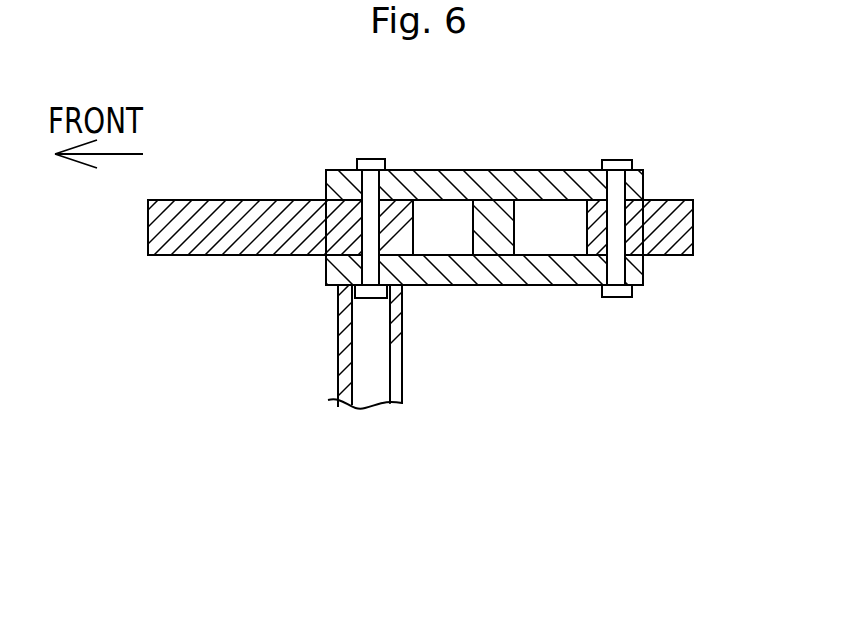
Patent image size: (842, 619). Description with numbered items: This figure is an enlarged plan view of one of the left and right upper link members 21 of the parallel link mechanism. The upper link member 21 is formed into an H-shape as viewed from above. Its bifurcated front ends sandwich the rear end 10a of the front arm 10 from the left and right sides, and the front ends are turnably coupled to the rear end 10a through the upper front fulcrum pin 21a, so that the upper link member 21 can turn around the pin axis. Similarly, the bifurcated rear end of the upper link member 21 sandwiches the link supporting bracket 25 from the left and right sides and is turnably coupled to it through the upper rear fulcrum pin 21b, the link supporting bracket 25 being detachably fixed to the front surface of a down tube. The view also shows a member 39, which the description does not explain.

The front arm 10 is at (180, 242).
The rear end of the front arm 10a is at (350, 232).
The upper link member 21 is at (487, 285).
The front fulcrum pin 21a is at (339, 305).
The rear fulcrum pin 21b is at (620, 297).
The link supporting bracket 25 is at (652, 222).
The cylindrical member 39 is at (400, 375).